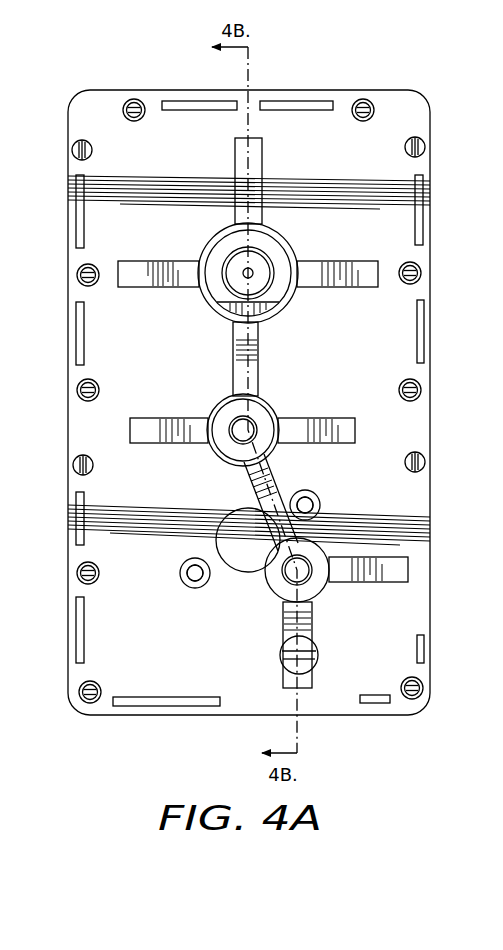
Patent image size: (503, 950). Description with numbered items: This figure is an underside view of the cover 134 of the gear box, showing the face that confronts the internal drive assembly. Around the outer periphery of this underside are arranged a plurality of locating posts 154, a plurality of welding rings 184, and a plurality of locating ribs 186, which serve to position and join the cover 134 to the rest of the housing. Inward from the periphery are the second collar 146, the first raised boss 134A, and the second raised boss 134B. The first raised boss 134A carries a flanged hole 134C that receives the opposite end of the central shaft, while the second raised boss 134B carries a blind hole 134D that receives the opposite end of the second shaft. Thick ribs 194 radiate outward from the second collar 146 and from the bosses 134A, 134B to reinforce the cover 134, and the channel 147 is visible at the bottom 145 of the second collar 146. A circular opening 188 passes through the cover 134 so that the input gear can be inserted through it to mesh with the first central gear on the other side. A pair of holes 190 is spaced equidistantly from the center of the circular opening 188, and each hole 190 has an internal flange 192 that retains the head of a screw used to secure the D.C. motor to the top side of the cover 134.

The cover 134 is at (115, 730).
The first raised boss 134A is at (213, 403).
The second raised boss 134B is at (266, 582).
The flanged hole 134C is at (258, 421).
The blind hole 134D is at (290, 582).
The bottom of the second collar 145 is at (270, 263).
The second collar 146 is at (290, 243).
The channel 147 is at (245, 278).
The locating posts 154 is at (72, 150).
The welding rings 184 is at (134, 99).
The locating ribs 186 is at (182, 101).
The circular opening 188 is at (238, 571).
The holes 190 is at (303, 490).
The internal flange 192 is at (320, 500).
The thick ribs 194 is at (235, 217).